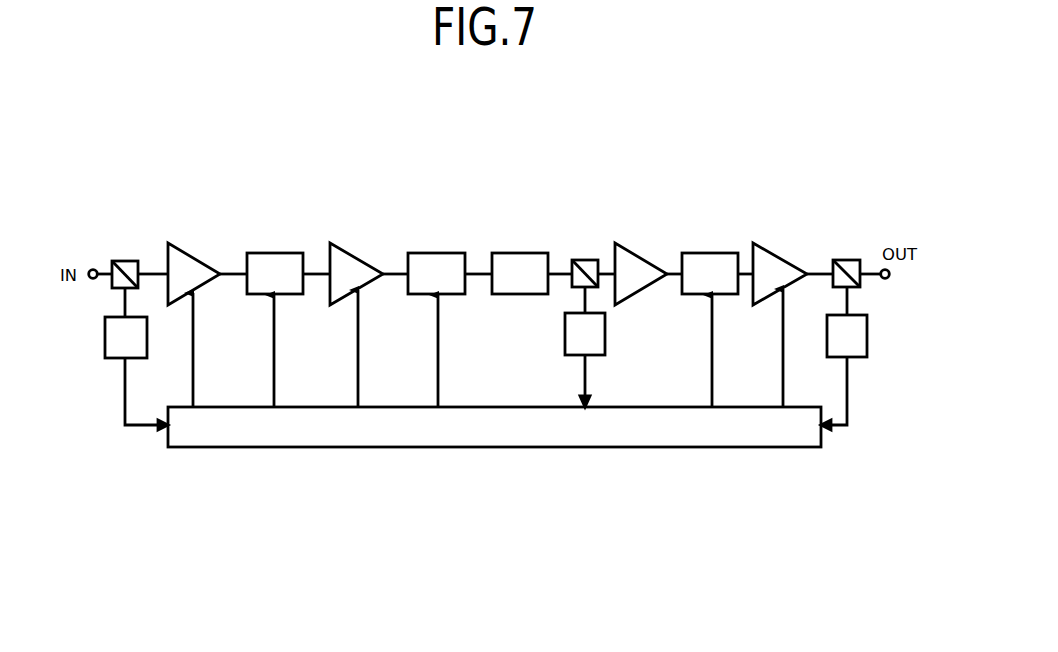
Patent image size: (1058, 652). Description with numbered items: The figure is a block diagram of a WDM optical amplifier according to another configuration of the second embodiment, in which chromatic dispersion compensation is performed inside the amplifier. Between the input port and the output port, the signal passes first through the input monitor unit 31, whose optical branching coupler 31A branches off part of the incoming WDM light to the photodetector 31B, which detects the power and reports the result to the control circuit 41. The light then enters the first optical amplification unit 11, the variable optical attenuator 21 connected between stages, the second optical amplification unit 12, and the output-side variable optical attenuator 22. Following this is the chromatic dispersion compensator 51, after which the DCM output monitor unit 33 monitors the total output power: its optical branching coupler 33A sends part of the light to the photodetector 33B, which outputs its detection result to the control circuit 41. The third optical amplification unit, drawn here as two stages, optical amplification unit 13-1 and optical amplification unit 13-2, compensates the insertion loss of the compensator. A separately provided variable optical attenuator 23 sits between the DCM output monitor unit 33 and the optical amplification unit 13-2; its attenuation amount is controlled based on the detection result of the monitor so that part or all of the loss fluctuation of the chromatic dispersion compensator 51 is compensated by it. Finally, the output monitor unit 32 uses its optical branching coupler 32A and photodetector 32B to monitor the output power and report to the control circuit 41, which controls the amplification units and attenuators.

The input monitor unit 31 is at (118, 283).
The optical branching coupler 31A is at (127, 260).
The photodetector 31B is at (110, 358).
The optical amplification unit 11 is at (190, 246).
The variable optical attenuator 21 is at (272, 253).
The optical amplification unit 12 is at (352, 249).
The variable optical attenuator 22 is at (437, 253).
The chromatic dispersion compensator 51 is at (520, 253).
The DCM output monitor unit 33 is at (584, 272).
The optical branching coupler 33A is at (585, 260).
The photodetector 33B is at (597, 355).
The optical amplification unit 13-1 is at (637, 250).
The variable optical attenuator 23 is at (712, 253).
The optical amplification unit 13-2 is at (775, 250).
The output monitor unit 32 is at (857, 283).
The optical branching coupler 32A is at (846, 260).
The photodetector 32B is at (865, 357).
The control circuit 41 is at (400, 450).